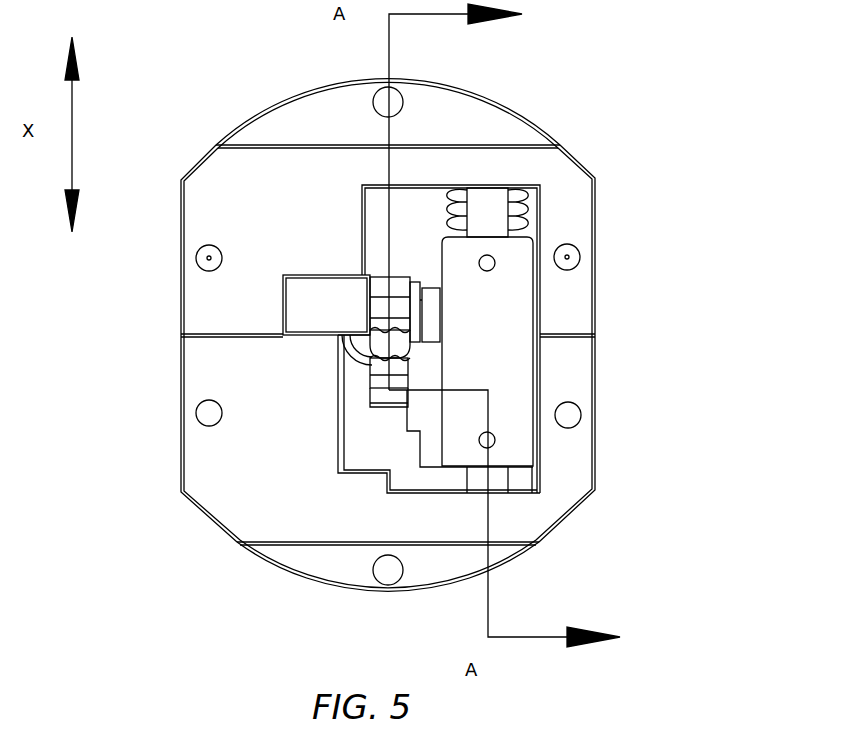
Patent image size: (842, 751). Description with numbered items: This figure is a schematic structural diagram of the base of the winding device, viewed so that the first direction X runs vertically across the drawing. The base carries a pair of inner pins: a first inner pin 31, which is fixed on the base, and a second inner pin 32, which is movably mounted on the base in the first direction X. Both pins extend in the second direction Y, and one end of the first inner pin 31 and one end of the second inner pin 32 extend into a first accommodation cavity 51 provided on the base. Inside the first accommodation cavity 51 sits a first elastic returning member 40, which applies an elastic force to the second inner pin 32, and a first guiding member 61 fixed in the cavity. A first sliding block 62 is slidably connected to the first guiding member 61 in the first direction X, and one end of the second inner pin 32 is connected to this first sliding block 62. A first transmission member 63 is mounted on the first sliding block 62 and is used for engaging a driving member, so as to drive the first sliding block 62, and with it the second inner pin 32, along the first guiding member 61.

The first inner pin 31 is at (379, 401).
The second inner pin 32 is at (378, 308).
The first elastic returning member 40 is at (516, 199).
The first accommodation cavity 51 is at (430, 196).
The first guiding member 61 is at (492, 217).
The first sliding block 62 is at (505, 352).
The first transmission member 63 is at (430, 317).